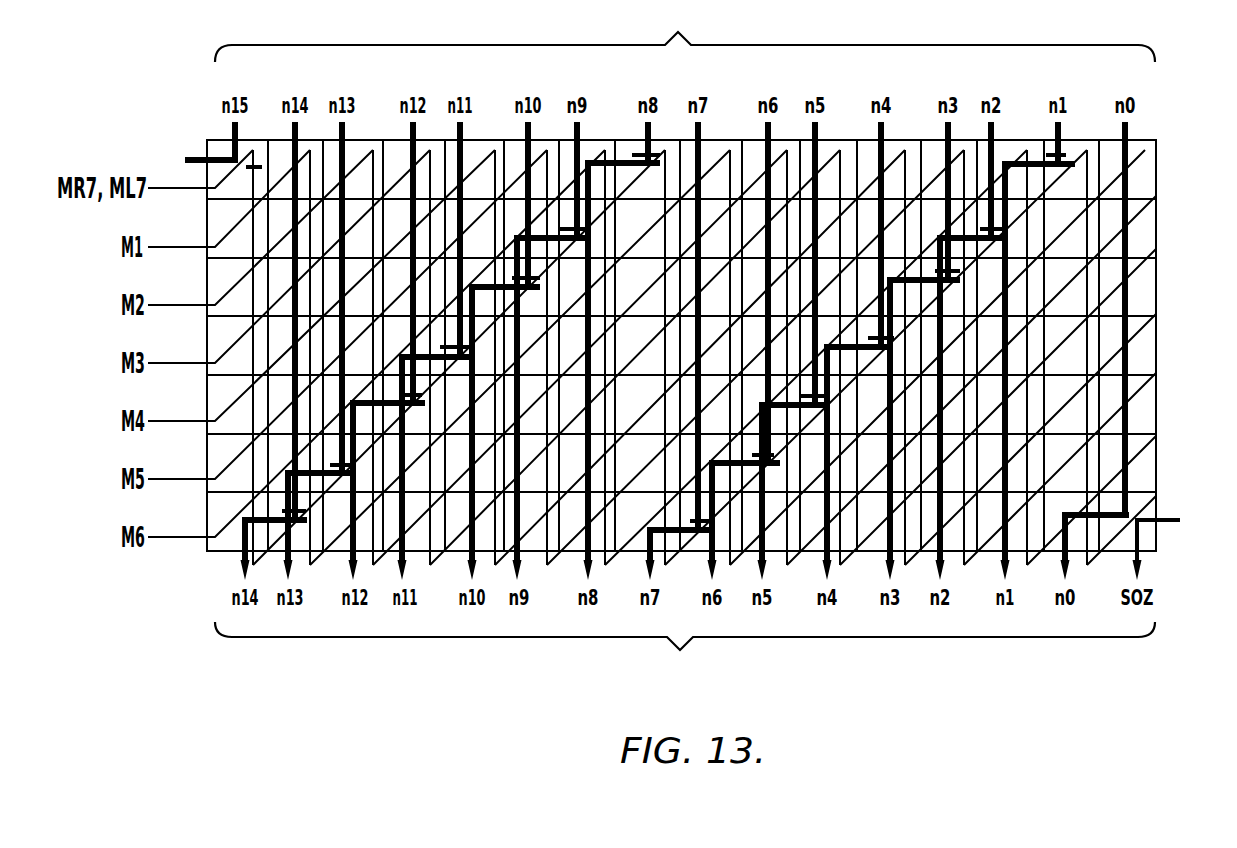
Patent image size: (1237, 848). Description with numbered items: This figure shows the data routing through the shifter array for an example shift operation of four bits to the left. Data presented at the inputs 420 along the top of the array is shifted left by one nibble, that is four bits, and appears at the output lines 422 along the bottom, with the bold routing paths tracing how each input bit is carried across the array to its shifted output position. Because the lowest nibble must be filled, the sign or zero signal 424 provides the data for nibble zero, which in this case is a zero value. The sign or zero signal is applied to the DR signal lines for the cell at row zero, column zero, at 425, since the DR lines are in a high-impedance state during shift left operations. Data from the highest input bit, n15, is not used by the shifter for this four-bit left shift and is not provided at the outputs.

The inputs 420 is at (685, 31).
The output lines 422 is at (685, 657).
The sign or zero signal 424 is at (1170, 519).
The DR signal lines for cell (0,0) 425 is at (1147, 512).